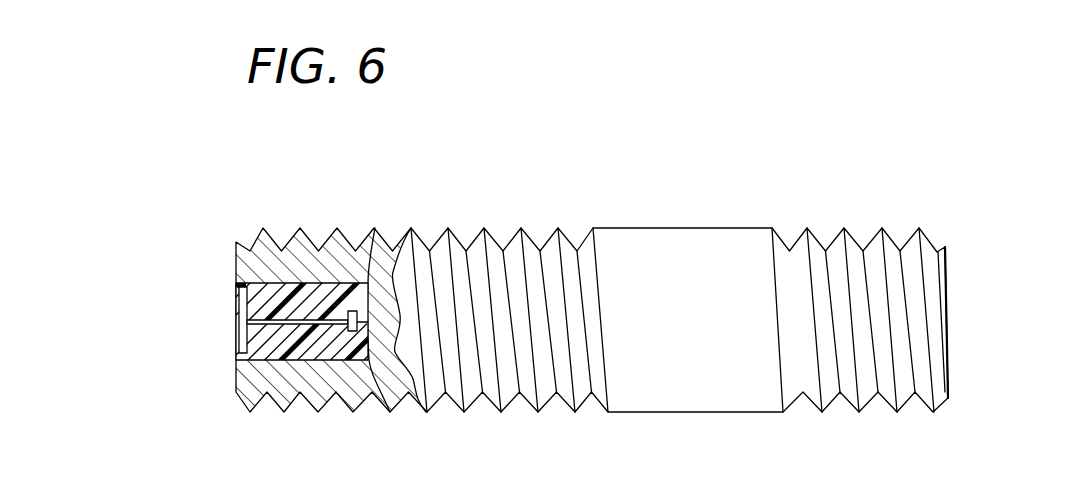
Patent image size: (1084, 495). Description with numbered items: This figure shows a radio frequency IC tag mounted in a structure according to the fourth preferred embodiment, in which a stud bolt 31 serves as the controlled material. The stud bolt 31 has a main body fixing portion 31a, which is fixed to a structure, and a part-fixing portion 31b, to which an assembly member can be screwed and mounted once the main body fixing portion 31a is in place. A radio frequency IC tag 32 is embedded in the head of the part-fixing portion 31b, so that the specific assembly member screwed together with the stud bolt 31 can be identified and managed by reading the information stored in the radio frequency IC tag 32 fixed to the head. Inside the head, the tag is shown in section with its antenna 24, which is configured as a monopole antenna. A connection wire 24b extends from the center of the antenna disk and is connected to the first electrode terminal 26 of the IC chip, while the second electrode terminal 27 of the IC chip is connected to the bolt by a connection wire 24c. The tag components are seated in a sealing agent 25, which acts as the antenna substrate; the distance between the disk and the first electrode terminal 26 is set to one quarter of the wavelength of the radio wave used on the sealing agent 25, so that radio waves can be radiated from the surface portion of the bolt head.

The stud bolt 31 is at (613, 210).
The main body fixing portion 31a is at (823, 230).
The part-fixing portion 31b is at (319, 234).
The antenna 24 is at (226, 318).
The connection wire 24b is at (272, 238).
The connection wire 24c is at (378, 228).
The sealing agent 25 is at (240, 362).
The first electrode terminal 26 is at (345, 398).
The second electrode terminal 27 is at (378, 388).
The radio frequency IC tag 32 is at (216, 347).